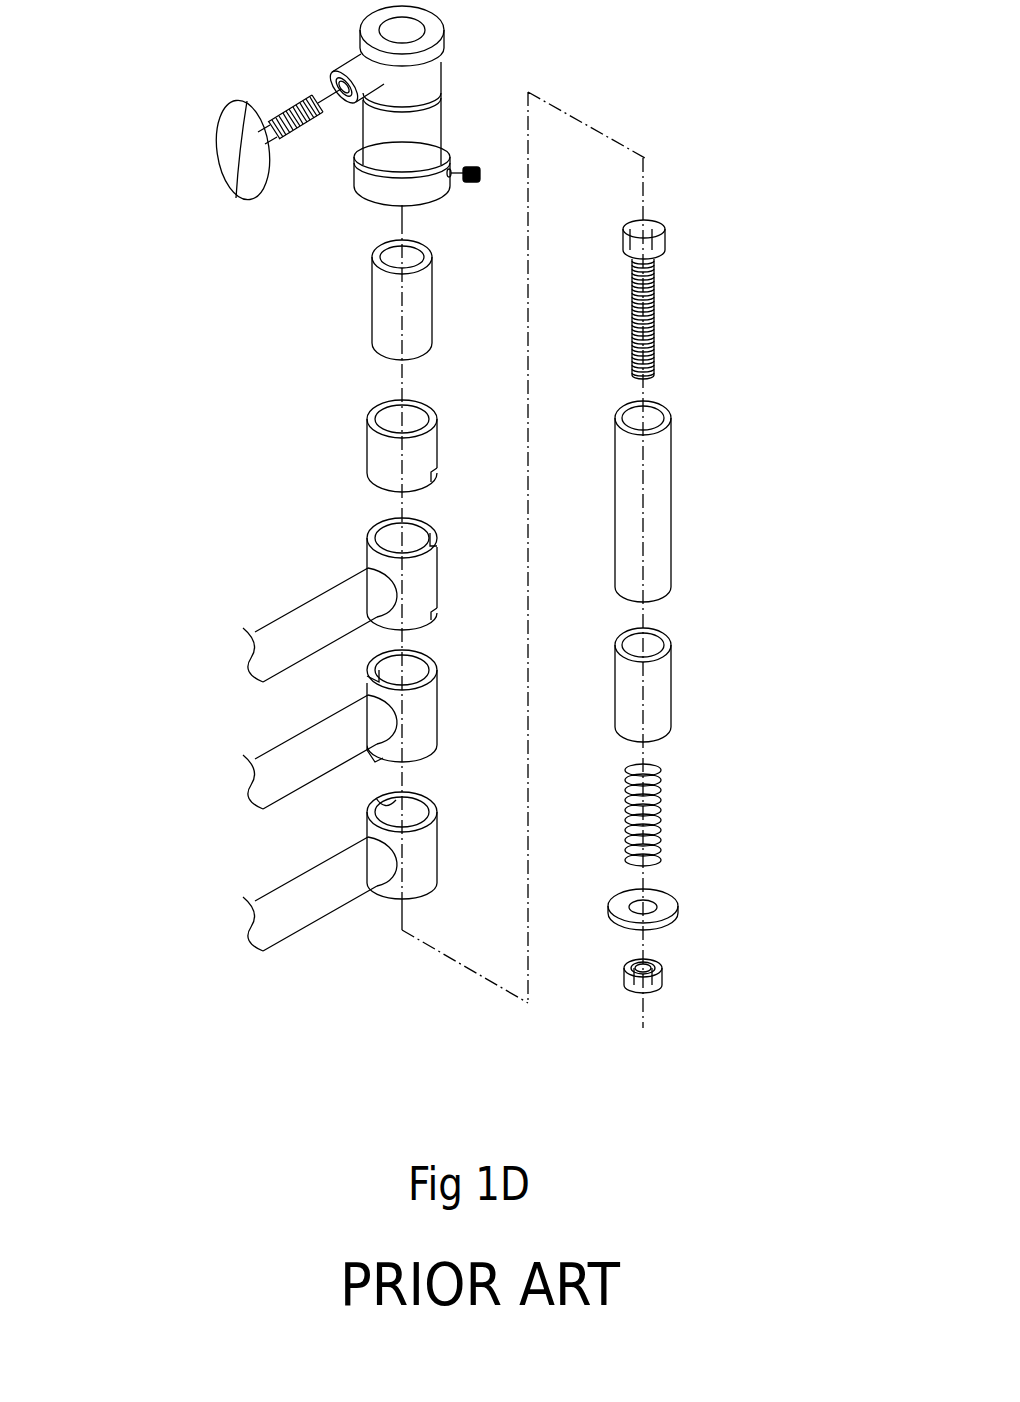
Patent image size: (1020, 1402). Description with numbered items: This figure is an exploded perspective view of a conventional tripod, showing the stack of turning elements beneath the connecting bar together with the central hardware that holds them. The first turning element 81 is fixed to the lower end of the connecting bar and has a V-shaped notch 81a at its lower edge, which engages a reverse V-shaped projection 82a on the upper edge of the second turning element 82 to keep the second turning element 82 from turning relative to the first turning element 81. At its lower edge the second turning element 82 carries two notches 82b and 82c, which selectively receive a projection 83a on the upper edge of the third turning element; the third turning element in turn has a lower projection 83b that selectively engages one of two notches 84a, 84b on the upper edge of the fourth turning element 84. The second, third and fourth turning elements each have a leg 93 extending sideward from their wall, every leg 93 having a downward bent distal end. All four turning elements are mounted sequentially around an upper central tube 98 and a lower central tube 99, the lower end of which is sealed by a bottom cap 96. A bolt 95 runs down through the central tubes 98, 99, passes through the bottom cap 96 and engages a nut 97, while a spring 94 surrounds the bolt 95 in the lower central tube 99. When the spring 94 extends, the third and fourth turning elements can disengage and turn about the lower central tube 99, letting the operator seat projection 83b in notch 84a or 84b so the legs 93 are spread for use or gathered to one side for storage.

The first turning element 81 is at (377, 447).
The V-shaped notch 81a is at (430, 483).
The second turning element 82 is at (357, 560).
The reverse V-shaped projection 82a is at (430, 538).
The notch 82b is at (375, 617).
The notch 82c is at (430, 617).
The projection 83a is at (370, 692).
The projection 83b is at (368, 765).
The fourth turning element 84 is at (377, 820).
The notch 84a is at (387, 797).
The notch 84b is at (393, 832).
The leg 93 is at (282, 653).
The spring 94 is at (655, 808).
The bolt 95 is at (645, 285).
The bottom cap 96 is at (670, 903).
The nut 97 is at (660, 978).
The upper central tube 98 is at (638, 467).
The lower central tube 99 is at (655, 712).